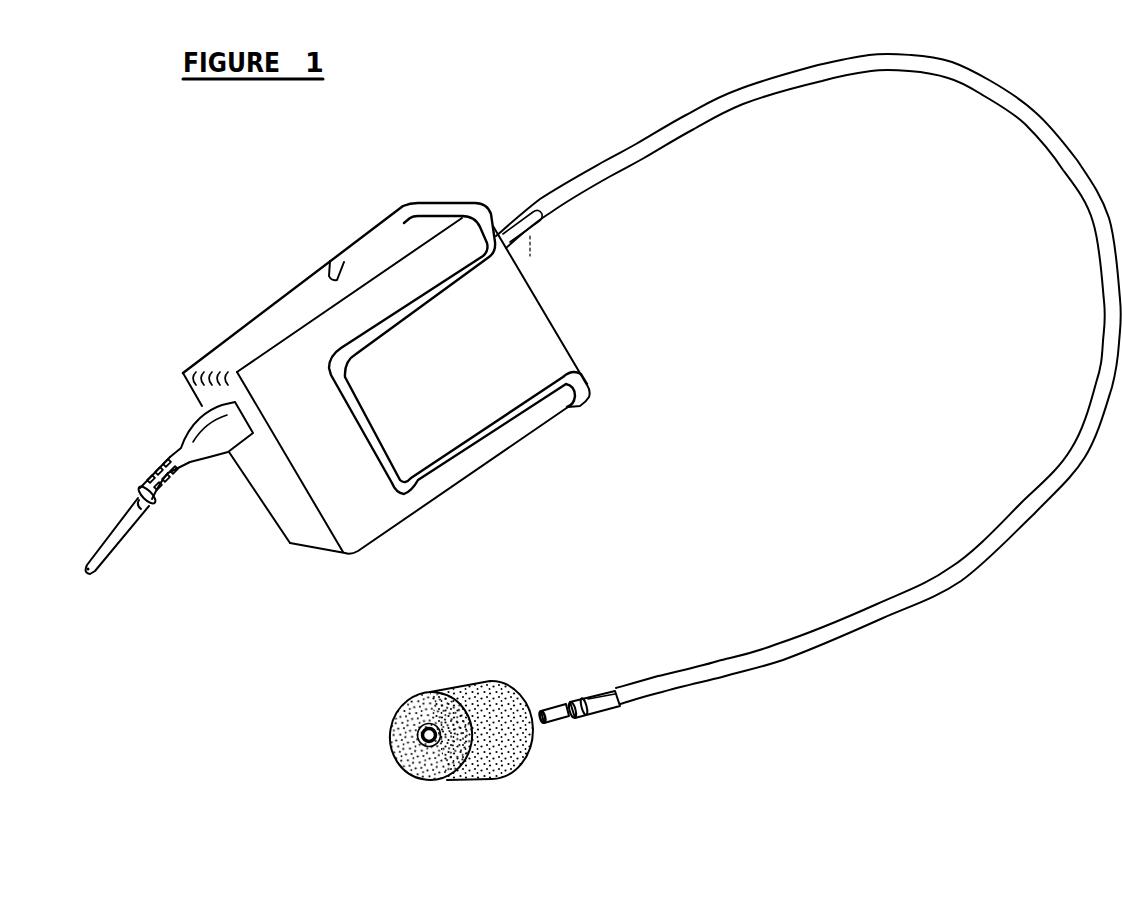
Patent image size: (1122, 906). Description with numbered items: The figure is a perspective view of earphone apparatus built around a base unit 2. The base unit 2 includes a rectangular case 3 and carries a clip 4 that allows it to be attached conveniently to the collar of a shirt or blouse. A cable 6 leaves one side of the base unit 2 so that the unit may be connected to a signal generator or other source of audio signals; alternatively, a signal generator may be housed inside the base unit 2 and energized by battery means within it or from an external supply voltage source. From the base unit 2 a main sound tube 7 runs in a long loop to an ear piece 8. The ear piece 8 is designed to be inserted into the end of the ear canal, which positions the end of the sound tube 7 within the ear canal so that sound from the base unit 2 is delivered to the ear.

The base unit 2 is at (274, 295).
The rectangular case 3 is at (443, 499).
The clip 4 is at (510, 431).
The cable 6 is at (135, 526).
The main sound tube 7 is at (963, 580).
The ear piece 8 is at (511, 755).